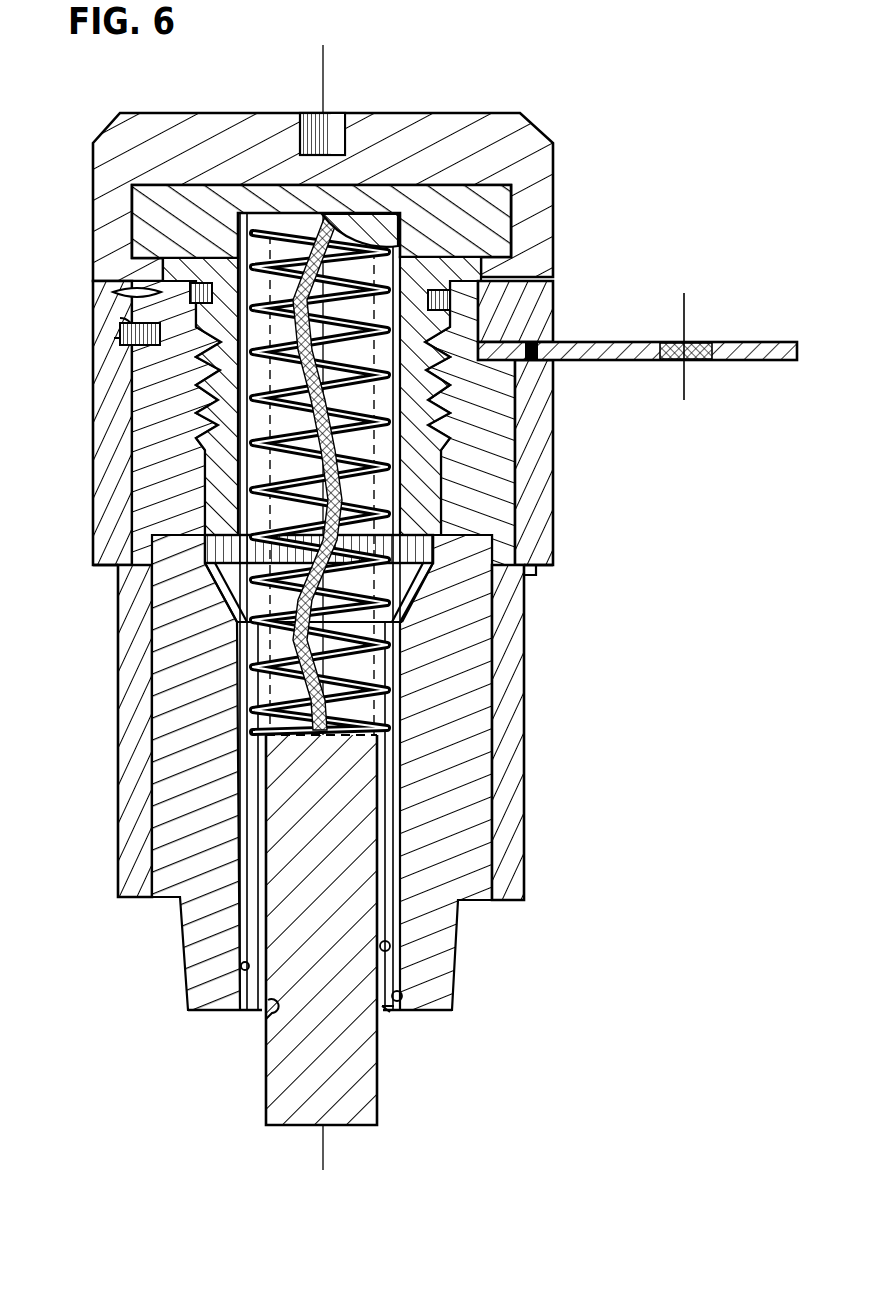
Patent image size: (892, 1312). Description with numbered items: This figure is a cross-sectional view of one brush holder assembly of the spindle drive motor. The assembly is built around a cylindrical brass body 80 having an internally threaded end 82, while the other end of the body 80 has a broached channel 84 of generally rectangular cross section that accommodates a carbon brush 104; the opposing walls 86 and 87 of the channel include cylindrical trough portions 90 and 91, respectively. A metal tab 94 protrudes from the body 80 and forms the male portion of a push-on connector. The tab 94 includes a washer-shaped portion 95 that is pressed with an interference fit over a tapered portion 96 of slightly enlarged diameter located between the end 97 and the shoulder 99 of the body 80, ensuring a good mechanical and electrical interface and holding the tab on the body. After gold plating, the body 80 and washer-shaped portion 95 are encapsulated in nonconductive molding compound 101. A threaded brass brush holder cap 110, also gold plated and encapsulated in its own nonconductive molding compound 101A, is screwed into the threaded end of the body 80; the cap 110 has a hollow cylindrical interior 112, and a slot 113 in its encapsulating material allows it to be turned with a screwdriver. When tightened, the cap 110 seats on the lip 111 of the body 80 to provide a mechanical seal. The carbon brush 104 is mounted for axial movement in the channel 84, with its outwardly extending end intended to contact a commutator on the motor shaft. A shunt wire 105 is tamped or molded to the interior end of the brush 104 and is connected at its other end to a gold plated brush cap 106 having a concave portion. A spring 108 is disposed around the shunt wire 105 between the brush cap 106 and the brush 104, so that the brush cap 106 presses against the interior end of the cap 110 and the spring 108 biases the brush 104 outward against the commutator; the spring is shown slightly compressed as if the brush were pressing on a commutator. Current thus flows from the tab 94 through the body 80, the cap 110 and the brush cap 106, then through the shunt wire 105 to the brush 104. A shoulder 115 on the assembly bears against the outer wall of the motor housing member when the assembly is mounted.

The cylindrical brass body 80 is at (470, 735).
The internally threaded end 82 is at (470, 402).
The broached channel 84 is at (390, 1014).
The channel wall 86 is at (266, 1016).
The channel wall 87 is at (392, 942).
The cylindrical trough portion 90 is at (240, 974).
The cylindrical trough portion 91 is at (404, 996).
The metal tab 94 is at (744, 344).
The washer-shaped portion 95 is at (118, 350).
The tapered portion 96 is at (500, 320).
The end of body 97 is at (470, 300).
The shoulder 99 is at (120, 328).
The nonconductive molding compound 101 is at (540, 500).
The nonconductive molding compound 101A is at (535, 142).
The carbon brush 104 is at (378, 1114).
The shunt wire 105 is at (541, 732).
The brush cap 106 is at (382, 218).
The spring 108 is at (200, 592).
The brush holder cap 110 is at (512, 215).
The lip 111 is at (140, 265).
The hollow cylindrical interior 112 is at (250, 258).
The slot 113 is at (334, 116).
The shoulder 115 is at (538, 572).